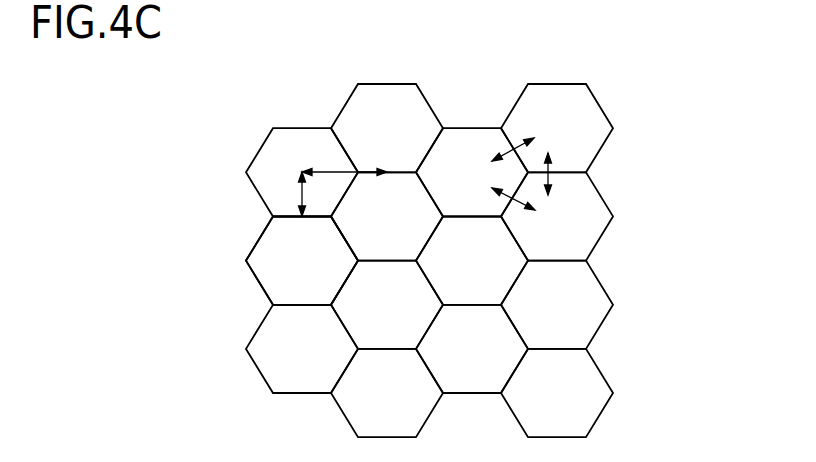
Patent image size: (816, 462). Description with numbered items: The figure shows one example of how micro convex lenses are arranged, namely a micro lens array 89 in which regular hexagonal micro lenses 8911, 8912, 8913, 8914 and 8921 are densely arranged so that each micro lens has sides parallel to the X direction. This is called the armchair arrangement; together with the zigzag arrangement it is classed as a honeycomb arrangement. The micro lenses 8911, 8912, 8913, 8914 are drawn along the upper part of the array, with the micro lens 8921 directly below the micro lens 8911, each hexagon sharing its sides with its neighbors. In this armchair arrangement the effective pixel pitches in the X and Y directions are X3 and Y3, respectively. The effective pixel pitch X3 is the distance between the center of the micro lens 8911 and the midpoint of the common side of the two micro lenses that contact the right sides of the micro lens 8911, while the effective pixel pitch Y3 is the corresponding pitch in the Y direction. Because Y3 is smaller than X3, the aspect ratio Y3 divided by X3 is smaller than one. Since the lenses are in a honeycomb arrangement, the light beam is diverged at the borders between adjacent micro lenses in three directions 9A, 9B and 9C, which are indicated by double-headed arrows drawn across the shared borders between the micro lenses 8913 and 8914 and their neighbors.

The micro lens array 89 is at (652, 172).
The micro lens 8911 is at (270, 168).
The micro lens 8912 is at (387, 102).
The micro lens 8913 is at (470, 147).
The micro lens 8914 is at (555, 103).
The micro lens 8921 is at (275, 250).
The effective pixel pitch in X direction X3 is at (337, 168).
The effective pixel pitch in Y direction Y3 is at (307, 197).
The direction 9A is at (517, 133).
The direction 9B is at (503, 200).
The direction 9C is at (556, 178).